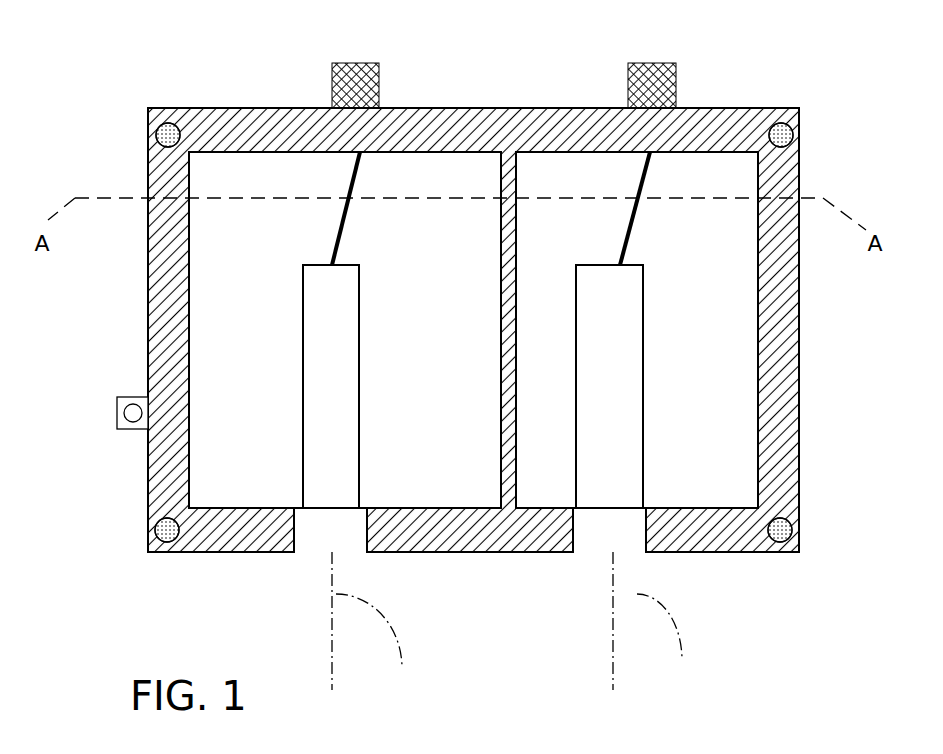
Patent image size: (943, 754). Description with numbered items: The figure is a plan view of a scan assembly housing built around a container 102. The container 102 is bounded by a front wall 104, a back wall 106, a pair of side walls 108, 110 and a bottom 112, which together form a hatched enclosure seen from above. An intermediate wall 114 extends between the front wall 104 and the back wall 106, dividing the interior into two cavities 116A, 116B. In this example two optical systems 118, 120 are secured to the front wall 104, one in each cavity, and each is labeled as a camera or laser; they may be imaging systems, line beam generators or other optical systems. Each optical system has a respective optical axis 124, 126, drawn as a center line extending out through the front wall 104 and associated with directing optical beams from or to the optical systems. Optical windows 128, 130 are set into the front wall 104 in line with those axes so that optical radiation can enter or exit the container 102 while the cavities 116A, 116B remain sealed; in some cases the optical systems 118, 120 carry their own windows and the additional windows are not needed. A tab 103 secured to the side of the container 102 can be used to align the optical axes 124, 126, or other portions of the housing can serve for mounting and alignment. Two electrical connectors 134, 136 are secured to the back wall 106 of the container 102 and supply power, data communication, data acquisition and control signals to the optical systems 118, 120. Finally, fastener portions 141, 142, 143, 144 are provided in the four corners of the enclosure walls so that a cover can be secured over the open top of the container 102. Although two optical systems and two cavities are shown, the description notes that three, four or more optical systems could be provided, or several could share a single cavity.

The container 102 is at (98, 503).
The tab 103 is at (117, 415).
The front wall 104 is at (738, 552).
The back wall 106 is at (575, 108).
The side wall 108 is at (147, 258).
The side wall 110 is at (799, 318).
The bottom 112 is at (720, 447).
The intermediate wall 114 is at (501, 287).
The cavity 116A is at (345, 330).
The cavity 116B is at (637, 330).
The optical system 118 is at (359, 307).
The optical system 120 is at (644, 308).
The optical axis 124 is at (382, 621).
The optical axis 126 is at (662, 621).
The optical window 128 is at (333, 535).
The optical window 130 is at (608, 550).
The electrical connector 134 is at (332, 63).
The electrical connector 136 is at (652, 63).
The fastener portion 141 is at (166, 123).
The fastener portion 142 is at (788, 125).
The fastener portion 143 is at (793, 522).
The fastener portion 144 is at (160, 526).